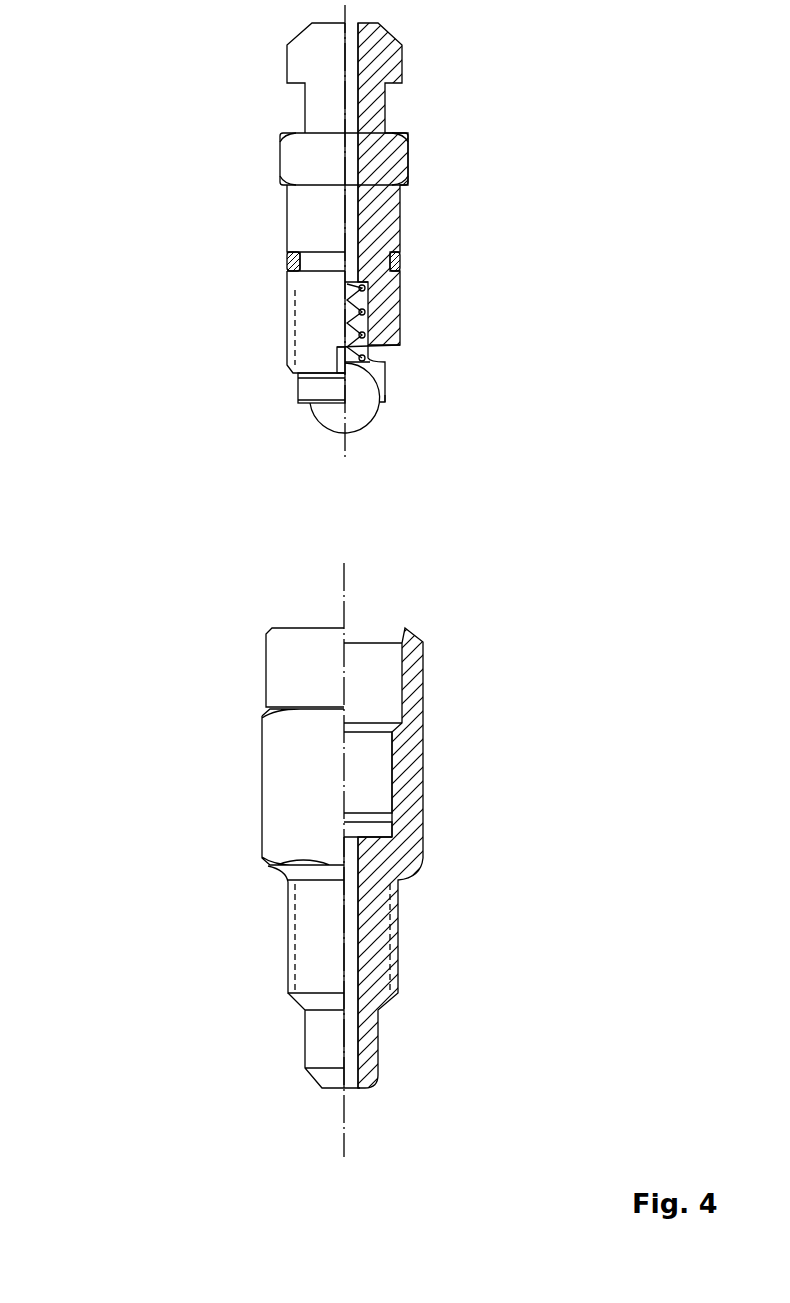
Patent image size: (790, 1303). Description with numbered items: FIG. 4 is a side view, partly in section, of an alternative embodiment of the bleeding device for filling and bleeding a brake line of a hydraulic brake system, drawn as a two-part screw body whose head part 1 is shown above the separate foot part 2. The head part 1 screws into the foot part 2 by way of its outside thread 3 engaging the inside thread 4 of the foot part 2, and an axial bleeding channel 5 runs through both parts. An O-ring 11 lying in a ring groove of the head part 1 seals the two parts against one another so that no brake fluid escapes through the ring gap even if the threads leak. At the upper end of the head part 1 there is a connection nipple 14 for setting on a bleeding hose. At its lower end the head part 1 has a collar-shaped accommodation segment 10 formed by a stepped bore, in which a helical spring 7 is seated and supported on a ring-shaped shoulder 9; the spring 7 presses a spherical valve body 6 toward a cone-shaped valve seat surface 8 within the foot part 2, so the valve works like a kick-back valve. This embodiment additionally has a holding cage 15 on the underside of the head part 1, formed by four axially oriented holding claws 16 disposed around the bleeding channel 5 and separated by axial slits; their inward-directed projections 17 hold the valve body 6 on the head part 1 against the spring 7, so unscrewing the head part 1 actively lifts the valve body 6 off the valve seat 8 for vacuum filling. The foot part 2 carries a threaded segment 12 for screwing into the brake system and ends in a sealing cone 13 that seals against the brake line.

The head part 1 is at (398, 192).
The foot part 2 is at (315, 790).
The outside thread 3 is at (288, 343).
The inside thread 4 is at (395, 762).
The bleeding channel 5 is at (353, 107).
The spherical valve body 6 is at (332, 415).
The helical spring 7 is at (374, 336).
The valve seat surface 8 is at (424, 851).
The ring-shaped shoulder 9 is at (402, 276).
The accommodation segment 10 is at (372, 312).
The O-ring 11 is at (286, 261).
The threaded segment 12 is at (290, 935).
The sealing cone 13 is at (310, 1078).
The connection nipple 14 is at (317, 63).
The holding cage 15 is at (393, 370).
The holding claws 16 is at (308, 392).
The projections 17 is at (390, 403).